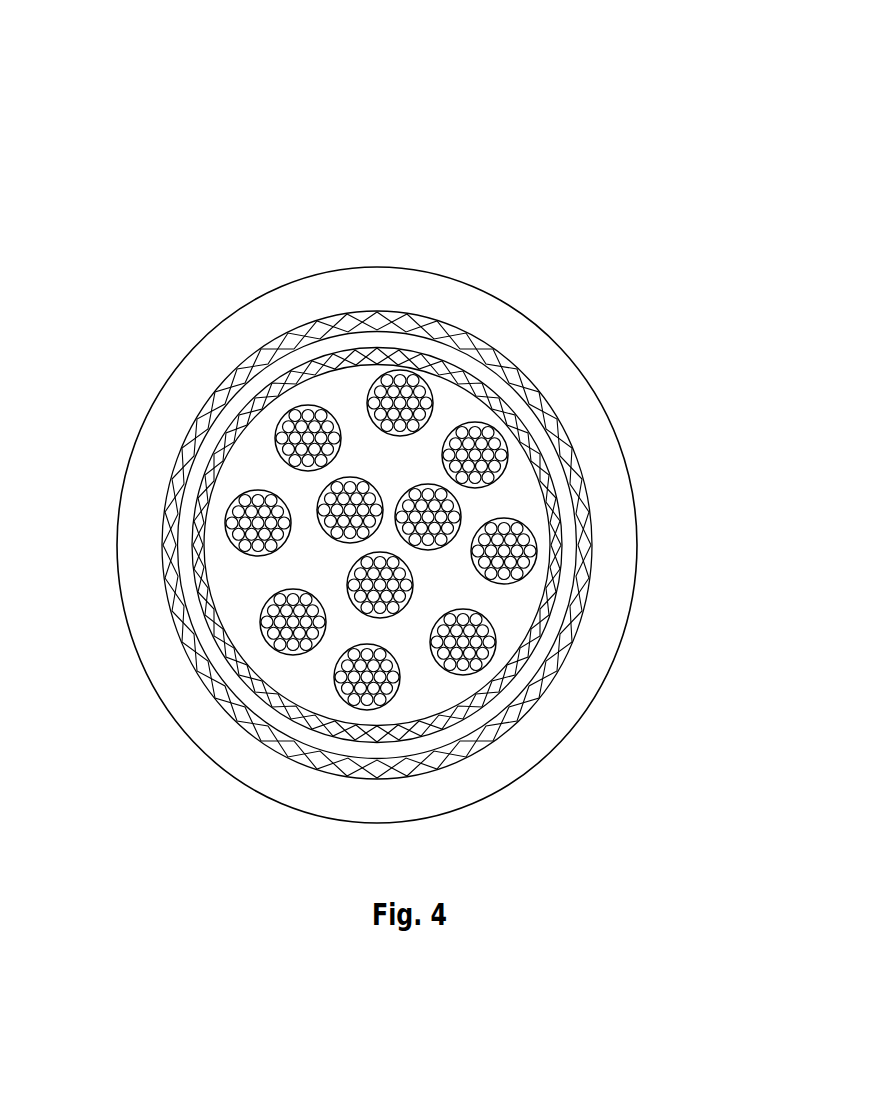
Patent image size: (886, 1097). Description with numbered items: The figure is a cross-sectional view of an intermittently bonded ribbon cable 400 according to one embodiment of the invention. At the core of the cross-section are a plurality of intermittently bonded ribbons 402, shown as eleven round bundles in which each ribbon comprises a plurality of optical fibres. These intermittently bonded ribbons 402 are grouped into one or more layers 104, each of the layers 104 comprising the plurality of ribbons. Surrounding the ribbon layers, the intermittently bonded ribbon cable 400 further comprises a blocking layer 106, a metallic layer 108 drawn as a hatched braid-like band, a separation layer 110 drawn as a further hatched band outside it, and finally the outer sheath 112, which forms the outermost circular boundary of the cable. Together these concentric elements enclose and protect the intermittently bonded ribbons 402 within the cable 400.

The intermittently bonded ribbon cable 400 is at (168, 81).
The intermittently bonded ribbons 402 is at (490, 420).
The layers 104 is at (560, 495).
The blocking layer 106 is at (540, 610).
The metallic layer 108 is at (588, 620).
The separation layer 110 is at (182, 627).
The outer sheath 112 is at (138, 543).